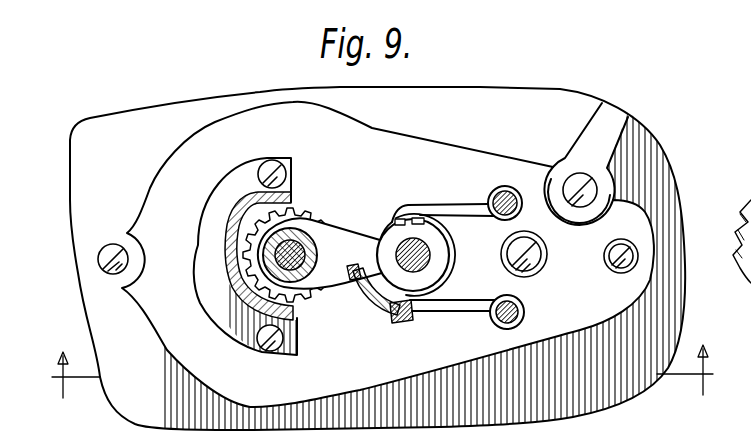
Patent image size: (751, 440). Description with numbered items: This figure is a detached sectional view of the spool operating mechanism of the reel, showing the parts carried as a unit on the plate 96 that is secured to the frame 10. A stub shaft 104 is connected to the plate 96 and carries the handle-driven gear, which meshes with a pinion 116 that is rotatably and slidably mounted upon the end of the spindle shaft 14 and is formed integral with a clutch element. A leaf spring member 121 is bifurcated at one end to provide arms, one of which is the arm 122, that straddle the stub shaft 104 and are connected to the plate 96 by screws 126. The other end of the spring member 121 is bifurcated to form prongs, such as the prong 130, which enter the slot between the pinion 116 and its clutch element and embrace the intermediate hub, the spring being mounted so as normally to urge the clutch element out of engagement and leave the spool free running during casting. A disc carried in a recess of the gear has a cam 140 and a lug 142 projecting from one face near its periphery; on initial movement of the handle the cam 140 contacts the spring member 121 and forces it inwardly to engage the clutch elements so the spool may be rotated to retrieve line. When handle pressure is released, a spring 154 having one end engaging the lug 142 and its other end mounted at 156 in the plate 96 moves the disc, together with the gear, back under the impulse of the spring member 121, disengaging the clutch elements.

The frame 10 is at (381, 371).
The spindle shaft 14 is at (266, 284).
The plate 96 is at (533, 341).
The stub shaft 104 is at (430, 259).
The pinion 116 is at (225, 253).
The leaf spring member 121 is at (388, 223).
The arm 122 is at (522, 298).
The screw 126 is at (503, 186).
The arm or prong 130 is at (304, 221).
The cam 140 is at (350, 284).
The lug 142 is at (399, 324).
The spring 154 is at (453, 301).
The spring mounting 156 is at (419, 215).